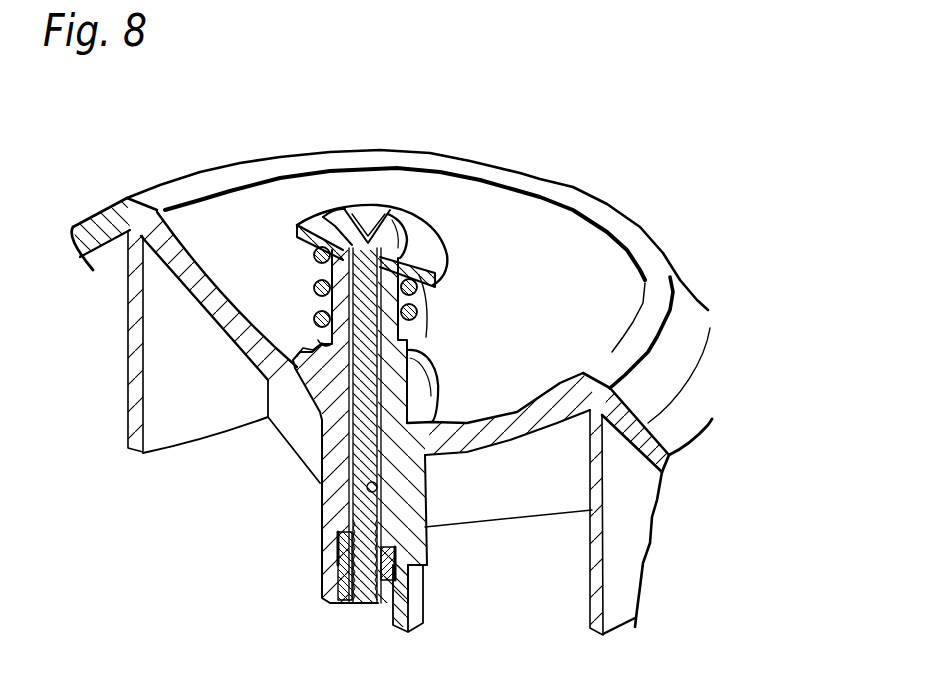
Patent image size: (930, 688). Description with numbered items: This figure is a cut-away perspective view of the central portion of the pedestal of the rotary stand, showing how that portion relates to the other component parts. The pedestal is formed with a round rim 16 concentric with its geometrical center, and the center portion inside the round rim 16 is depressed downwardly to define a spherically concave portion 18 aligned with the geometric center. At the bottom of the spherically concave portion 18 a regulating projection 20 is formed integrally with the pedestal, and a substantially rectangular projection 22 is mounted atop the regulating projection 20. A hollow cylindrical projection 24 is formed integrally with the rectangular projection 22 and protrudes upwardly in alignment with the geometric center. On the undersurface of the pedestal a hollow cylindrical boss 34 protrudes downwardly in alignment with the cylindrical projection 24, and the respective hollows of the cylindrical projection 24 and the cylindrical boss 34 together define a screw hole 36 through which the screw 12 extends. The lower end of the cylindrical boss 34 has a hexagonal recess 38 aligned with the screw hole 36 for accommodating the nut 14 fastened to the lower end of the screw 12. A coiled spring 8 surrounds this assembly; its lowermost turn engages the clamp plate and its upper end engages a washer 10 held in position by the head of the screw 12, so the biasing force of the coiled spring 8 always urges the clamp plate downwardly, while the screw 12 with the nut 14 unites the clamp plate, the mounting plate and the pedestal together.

The coiled spring 8 is at (427, 320).
The washer 10 is at (443, 247).
The screw 12 is at (407, 200).
The nut 14 is at (343, 545).
The round rim 16 is at (300, 160).
The spherically concave portion 18 is at (200, 250).
The regulating projection 20 is at (436, 373).
The rectangular projection 22 is at (330, 345).
The hollow cylindrical projection 24 is at (318, 264).
The hollow cylindrical boss 34 is at (420, 595).
The screw hole 36 is at (383, 517).
The hexagonal recess 38 is at (348, 597).